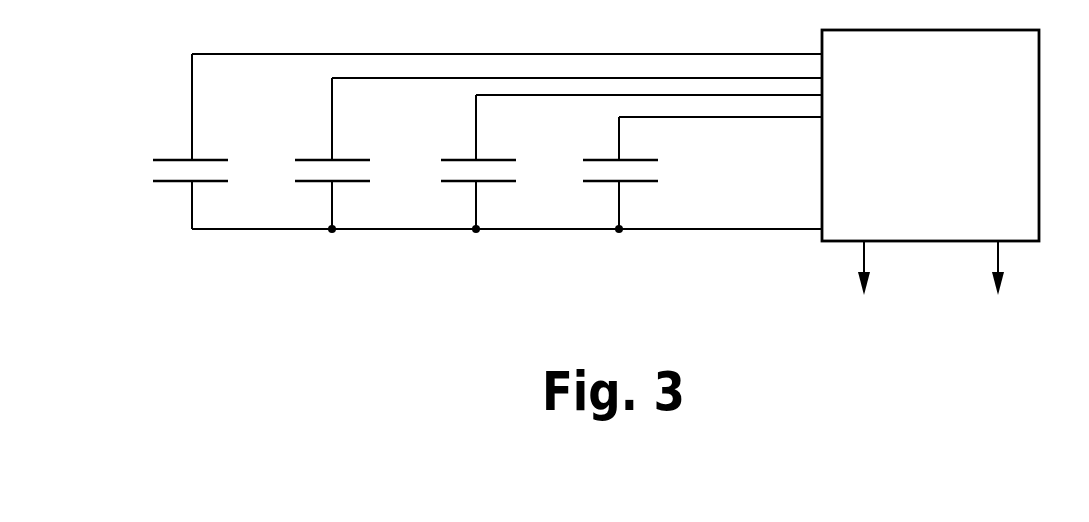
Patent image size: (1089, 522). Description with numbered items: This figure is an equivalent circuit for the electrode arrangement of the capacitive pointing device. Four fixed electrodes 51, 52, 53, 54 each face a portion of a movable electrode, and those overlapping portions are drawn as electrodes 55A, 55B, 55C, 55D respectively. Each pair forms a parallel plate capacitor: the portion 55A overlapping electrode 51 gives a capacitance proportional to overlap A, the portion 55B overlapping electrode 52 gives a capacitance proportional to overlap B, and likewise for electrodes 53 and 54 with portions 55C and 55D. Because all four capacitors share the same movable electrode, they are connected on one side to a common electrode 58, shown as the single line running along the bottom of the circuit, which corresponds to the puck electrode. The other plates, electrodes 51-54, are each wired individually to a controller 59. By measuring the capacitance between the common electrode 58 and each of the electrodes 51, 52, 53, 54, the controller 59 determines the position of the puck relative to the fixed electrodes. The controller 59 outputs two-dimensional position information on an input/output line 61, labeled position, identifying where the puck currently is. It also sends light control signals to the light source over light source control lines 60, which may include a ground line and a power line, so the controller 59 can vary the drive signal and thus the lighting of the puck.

The electrode 51 is at (176, 158).
The electrode 52 is at (316, 158).
The electrode 53 is at (463, 158).
The electrode 54 is at (605, 158).
The electrode portion 55A is at (177, 183).
The electrode portion 55B is at (319, 183).
The electrode portion 55C is at (465, 183).
The electrode portion 55D is at (608, 183).
The common electrode 58 is at (702, 231).
The controller 59 is at (946, 180).
The light source control lines 60 is at (1000, 262).
The input/output line 61 is at (862, 262).